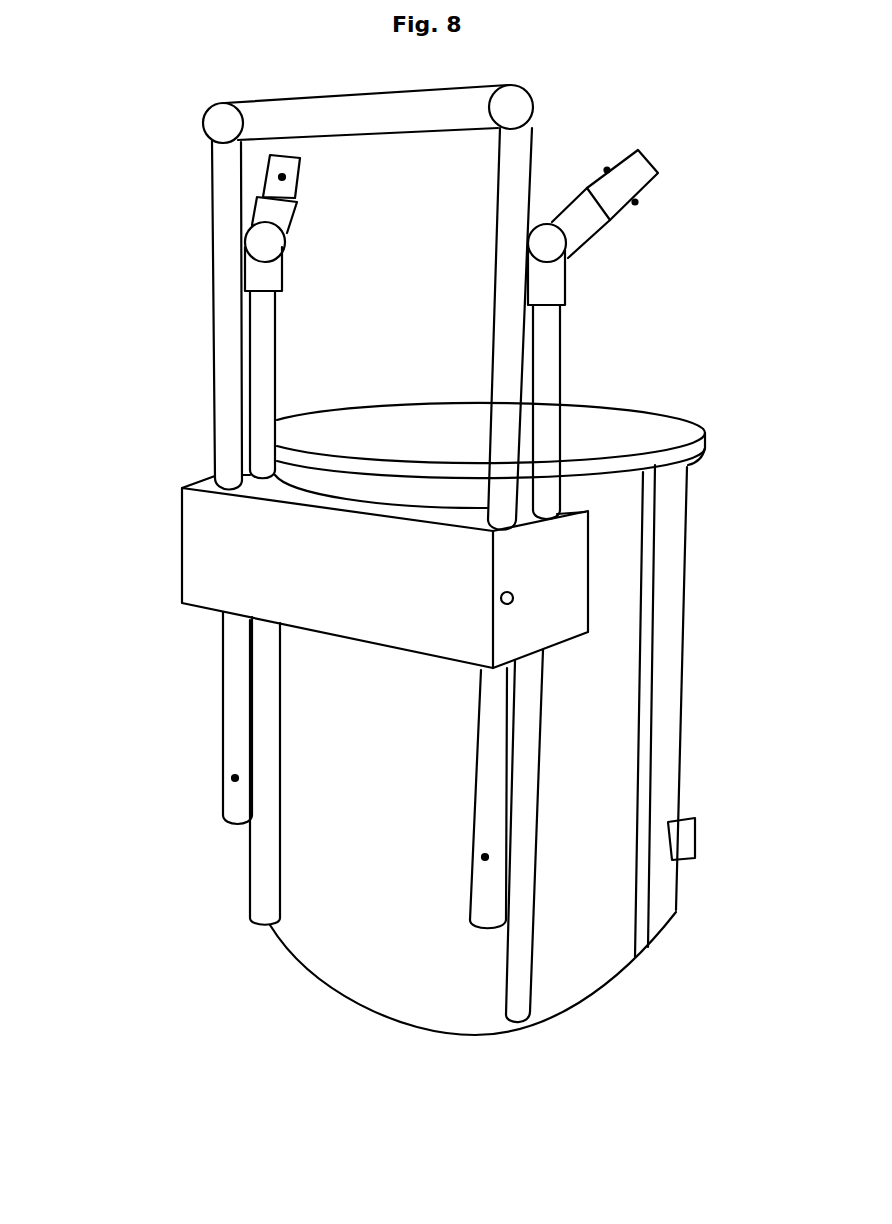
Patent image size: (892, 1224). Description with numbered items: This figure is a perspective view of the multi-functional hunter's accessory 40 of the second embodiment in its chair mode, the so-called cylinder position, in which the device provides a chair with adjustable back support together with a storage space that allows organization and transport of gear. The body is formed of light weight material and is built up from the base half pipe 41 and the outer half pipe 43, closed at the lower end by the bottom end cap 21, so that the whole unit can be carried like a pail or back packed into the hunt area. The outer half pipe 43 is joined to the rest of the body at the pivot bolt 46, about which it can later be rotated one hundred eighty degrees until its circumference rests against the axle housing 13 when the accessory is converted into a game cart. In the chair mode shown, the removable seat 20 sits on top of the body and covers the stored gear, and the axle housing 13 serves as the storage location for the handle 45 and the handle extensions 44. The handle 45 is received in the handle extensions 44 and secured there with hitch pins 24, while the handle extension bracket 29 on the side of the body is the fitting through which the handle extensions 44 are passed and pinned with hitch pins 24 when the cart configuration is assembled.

The axle housing 13 is at (173, 538).
The seat 20 is at (662, 410).
The bottom end cap 21 is at (575, 1005).
The hitch pins 24 is at (638, 203).
The handle extension bracket 29 is at (696, 838).
The multi-functional hunter's accessory 40 is at (172, 803).
The base half pipe 41 is at (352, 973).
The outer half pipe 43 is at (683, 683).
The handle extension 44 is at (562, 322).
The handle 45 is at (213, 292).
The pivot bolt 46 is at (672, 480).